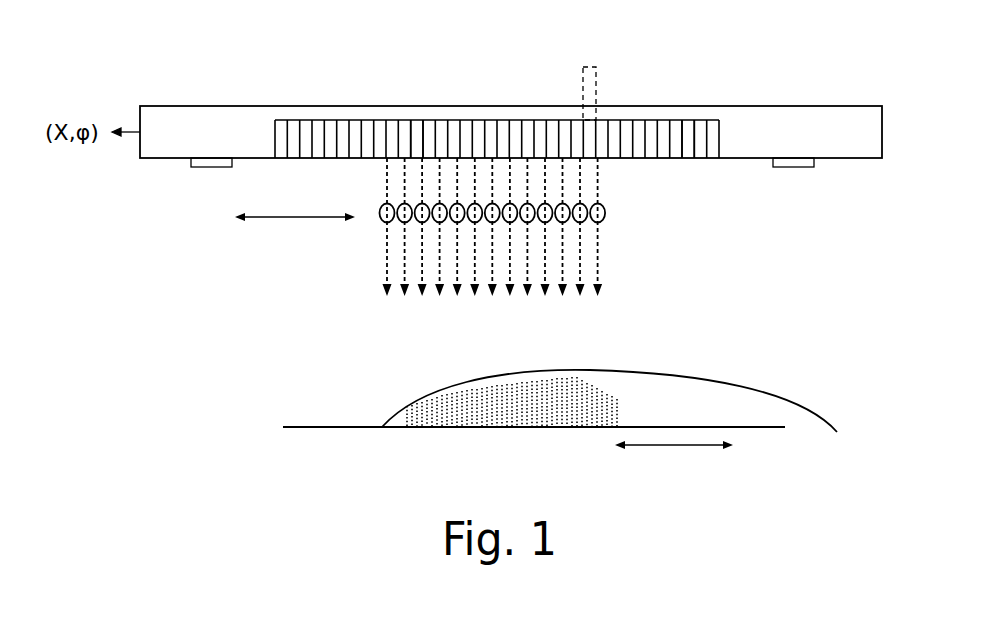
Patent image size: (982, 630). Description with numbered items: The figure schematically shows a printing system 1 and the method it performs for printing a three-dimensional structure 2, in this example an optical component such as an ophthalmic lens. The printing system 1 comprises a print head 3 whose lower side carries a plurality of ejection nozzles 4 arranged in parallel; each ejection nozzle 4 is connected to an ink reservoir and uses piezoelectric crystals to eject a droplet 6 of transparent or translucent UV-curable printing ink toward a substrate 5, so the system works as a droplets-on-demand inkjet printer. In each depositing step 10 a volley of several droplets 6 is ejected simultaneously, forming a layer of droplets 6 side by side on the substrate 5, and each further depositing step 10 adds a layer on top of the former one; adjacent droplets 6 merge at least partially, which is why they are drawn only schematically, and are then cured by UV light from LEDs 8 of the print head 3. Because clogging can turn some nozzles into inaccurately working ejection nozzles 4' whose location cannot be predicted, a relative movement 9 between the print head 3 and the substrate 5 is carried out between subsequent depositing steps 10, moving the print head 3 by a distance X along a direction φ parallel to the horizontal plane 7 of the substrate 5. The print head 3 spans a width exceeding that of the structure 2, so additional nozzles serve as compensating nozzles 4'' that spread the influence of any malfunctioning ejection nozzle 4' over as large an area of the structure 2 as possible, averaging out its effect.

The printing system 1 is at (266, 82).
The three-dimensional structure 2 is at (395, 422).
The print head 3 is at (800, 106).
The ejection nozzle 4 is at (497, 91).
The inaccurately working ejection nozzle 4' is at (428, 91).
The compensating nozzle 4'' is at (699, 91).
The substrate 5 is at (758, 437).
The droplet 6 is at (605, 212).
The horizontal plane 7 is at (677, 447).
The LED 8 is at (211, 167).
The relative movement 9 is at (292, 217).
The depositing step 10 is at (634, 263).